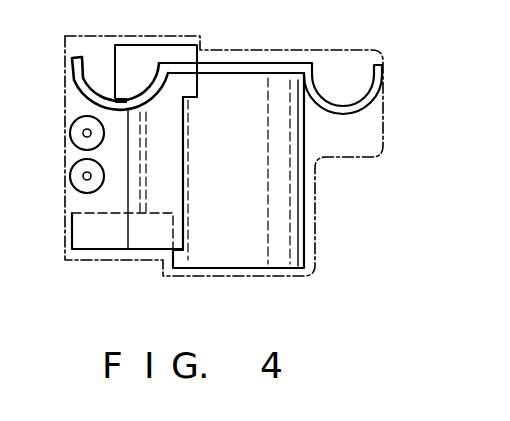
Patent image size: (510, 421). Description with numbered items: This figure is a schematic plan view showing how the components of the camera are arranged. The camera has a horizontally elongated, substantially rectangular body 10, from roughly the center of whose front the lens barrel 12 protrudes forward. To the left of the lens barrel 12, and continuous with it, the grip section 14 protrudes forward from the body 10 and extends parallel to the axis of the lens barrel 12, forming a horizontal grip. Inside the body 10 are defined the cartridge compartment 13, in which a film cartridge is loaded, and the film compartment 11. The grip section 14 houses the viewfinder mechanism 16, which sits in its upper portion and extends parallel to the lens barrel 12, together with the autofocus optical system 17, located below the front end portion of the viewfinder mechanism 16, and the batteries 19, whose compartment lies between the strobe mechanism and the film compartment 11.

The body 10 is at (383, 118).
The film compartment 11 is at (88, 72).
The lens barrel 12 is at (297, 248).
The cartridge compartment 13 is at (362, 85).
The grip section 14 is at (65, 217).
The viewfinder mechanism 16 is at (147, 50).
The autofocus optical system 17 is at (100, 243).
The batteries 19 is at (72, 173).